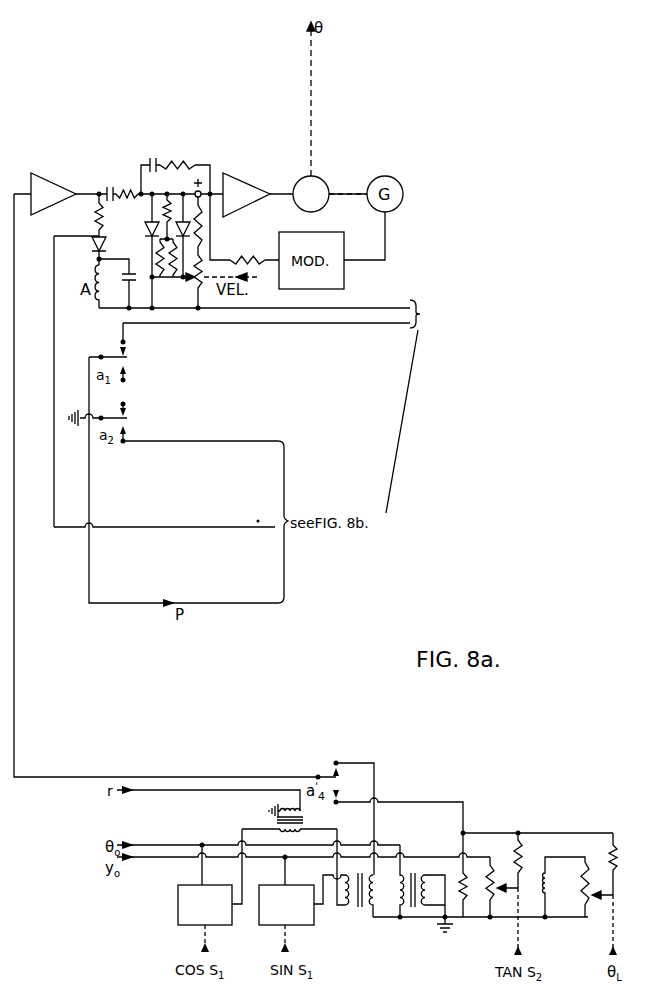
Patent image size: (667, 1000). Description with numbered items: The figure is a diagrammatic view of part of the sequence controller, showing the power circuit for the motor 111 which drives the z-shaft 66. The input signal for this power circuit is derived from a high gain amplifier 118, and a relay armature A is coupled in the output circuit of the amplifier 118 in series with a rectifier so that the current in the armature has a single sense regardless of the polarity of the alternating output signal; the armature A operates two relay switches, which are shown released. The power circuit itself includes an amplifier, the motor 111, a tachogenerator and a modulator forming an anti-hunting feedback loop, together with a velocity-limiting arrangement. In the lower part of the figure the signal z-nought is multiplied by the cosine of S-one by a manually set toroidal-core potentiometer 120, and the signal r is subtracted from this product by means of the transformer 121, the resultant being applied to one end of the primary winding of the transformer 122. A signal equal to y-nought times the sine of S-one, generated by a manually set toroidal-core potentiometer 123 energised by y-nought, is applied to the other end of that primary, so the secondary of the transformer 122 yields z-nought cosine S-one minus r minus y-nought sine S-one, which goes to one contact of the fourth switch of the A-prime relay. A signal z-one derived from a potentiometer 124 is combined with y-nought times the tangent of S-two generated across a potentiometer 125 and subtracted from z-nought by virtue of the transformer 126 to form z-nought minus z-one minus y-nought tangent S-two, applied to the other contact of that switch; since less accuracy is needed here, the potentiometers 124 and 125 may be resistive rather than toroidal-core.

The high gain amplifier 118 is at (55, 187).
The z-shaft 66 is at (311, 94).
The motor 111 is at (318, 180).
The transformer 121 is at (270, 821).
The toroidal-core potentiometer 120 is at (232, 921).
The toroidal-core potentiometer 123 is at (314, 921).
The transformer 122 is at (362, 910).
The transformer 126 is at (403, 908).
The potentiometer 125 is at (488, 905).
The potentiometer 124 is at (590, 907).